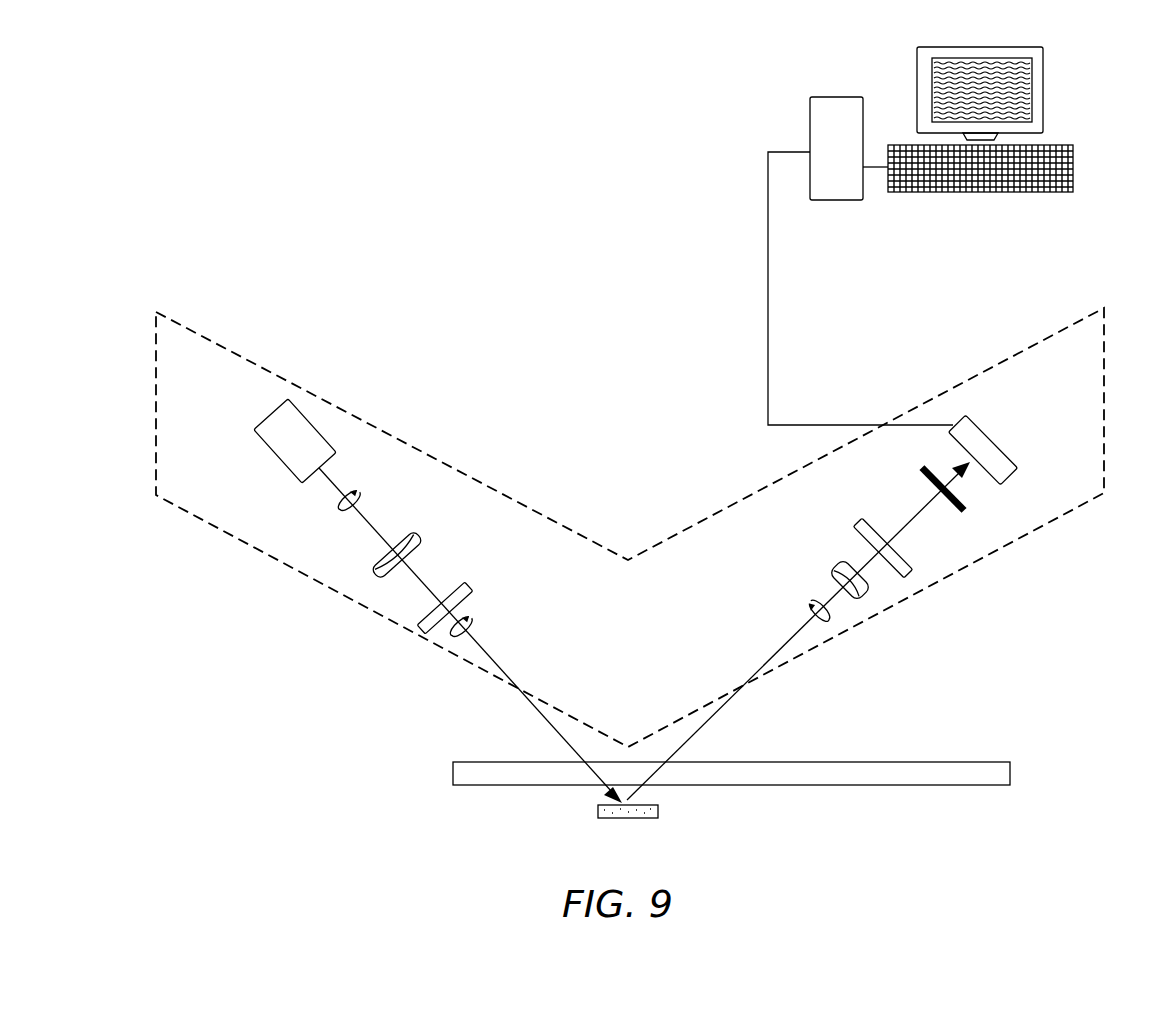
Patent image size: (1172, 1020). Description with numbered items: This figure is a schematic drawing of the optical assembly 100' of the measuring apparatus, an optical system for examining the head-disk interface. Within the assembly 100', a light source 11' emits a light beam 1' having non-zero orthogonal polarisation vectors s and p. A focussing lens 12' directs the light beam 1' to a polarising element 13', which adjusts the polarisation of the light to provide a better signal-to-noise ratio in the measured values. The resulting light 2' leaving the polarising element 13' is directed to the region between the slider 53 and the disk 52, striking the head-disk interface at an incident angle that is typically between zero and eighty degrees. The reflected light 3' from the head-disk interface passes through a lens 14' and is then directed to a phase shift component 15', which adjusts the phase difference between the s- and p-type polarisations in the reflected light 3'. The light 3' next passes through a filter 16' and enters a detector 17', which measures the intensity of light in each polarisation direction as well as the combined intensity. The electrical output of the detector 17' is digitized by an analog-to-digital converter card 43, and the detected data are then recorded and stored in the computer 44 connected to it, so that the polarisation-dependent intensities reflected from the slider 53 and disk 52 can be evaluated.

The optical assembly 100' is at (617, 489).
The light source 11' is at (275, 441).
The light beam 1' is at (367, 483).
The focussing lens 12' is at (419, 534).
The polarising element 13' is at (469, 589).
The resulting light 2' is at (485, 615).
The reflected light 3' is at (799, 602).
The lens 14' is at (827, 569).
The phase shift component 15' is at (864, 533).
The filter 16' is at (970, 503).
The detector 17' is at (1004, 450).
The analog-to-digital converter 43 is at (830, 201).
The computer 44 is at (995, 192).
The disk 52 is at (925, 762).
The slider 53 is at (650, 818).